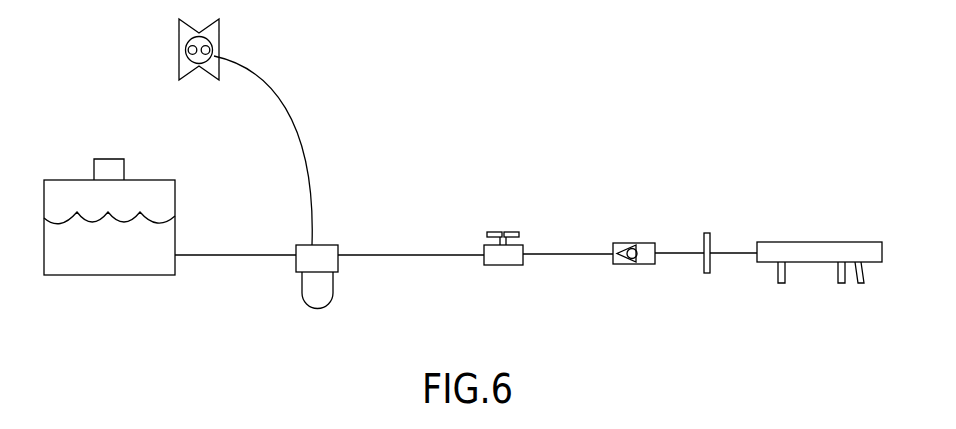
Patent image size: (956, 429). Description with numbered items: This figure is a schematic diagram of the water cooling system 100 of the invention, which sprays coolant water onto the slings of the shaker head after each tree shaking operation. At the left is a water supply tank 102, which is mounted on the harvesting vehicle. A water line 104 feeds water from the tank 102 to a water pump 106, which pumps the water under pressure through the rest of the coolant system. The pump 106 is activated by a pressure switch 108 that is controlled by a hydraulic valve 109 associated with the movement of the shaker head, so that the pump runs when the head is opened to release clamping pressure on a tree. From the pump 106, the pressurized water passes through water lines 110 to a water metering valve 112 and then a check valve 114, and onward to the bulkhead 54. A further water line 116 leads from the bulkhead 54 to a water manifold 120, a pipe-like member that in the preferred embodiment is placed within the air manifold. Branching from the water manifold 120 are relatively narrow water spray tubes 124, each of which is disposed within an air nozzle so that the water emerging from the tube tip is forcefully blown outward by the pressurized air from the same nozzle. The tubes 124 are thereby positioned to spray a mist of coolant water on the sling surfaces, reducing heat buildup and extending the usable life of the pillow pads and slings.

The water cooling system 100 is at (510, 329).
The water supply tank 102 is at (60, 180).
The water line 104 is at (208, 255).
The water pump 106 is at (329, 245).
The pressure switch 108 is at (185, 50).
The hydraulic valve 109 is at (219, 45).
The water lines 110 is at (415, 255).
The water metering valve 112 is at (519, 225).
The check valve 114 is at (630, 243).
The bulkhead 54 is at (707, 233).
The water line 116 is at (737, 252).
The water manifold 120 is at (882, 244).
The water spray tube 124 is at (782, 283).